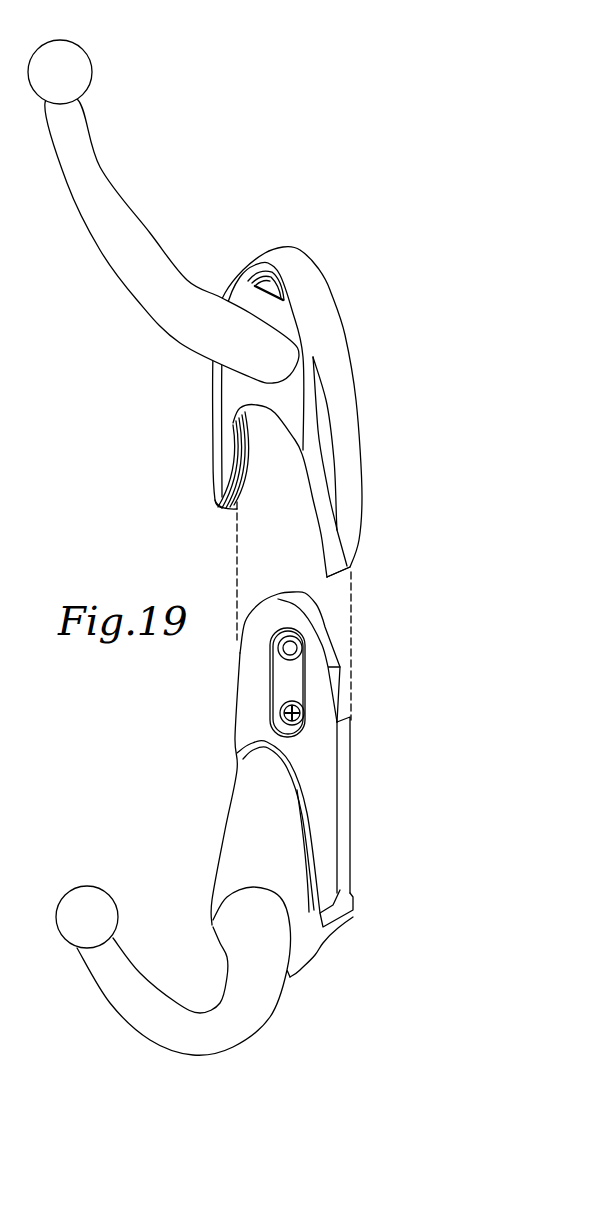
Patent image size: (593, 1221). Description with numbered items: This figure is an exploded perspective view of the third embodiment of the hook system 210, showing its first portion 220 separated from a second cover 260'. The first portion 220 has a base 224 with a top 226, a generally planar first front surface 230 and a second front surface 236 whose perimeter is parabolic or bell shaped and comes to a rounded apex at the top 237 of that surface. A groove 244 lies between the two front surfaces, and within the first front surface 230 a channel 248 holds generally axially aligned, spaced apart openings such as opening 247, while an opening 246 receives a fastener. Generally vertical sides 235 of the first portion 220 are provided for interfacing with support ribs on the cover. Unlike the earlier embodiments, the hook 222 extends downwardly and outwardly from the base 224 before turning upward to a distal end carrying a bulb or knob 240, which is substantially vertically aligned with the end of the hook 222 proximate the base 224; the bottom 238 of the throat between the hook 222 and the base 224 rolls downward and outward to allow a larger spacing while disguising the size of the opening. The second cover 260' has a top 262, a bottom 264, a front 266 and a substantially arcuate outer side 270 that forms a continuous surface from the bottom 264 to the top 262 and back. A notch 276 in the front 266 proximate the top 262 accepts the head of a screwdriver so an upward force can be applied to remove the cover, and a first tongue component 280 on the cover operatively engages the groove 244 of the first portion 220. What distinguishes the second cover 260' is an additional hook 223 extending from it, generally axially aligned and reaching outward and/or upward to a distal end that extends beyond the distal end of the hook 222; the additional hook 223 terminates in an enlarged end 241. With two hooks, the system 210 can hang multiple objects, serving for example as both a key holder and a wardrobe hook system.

The hook system 210 is at (128, 570).
The first portion 220 is at (190, 802).
The hook 222 is at (135, 1013).
The additional hook 223 is at (158, 307).
The base 224 is at (323, 800).
The top 226 is at (290, 595).
The first front surface 230 is at (252, 640).
The vertical sides 235 is at (348, 750).
The second front surface 236 is at (235, 858).
The top of second front surface 237 is at (257, 737).
The bottom of throat 238 is at (200, 1015).
The knob 240 is at (65, 928).
The upper ball end 241 is at (82, 62).
The groove 244 is at (317, 853).
The opening 246 is at (280, 653).
The opening 247 is at (282, 715).
The channel 248 is at (278, 673).
The second cover 260' is at (290, 387).
The top 262 is at (282, 255).
The bottom 264 is at (217, 510).
The front 266 is at (242, 388).
The outer side 270 is at (308, 270).
The notch 276 is at (252, 280).
The first tongue component 280 is at (250, 458).